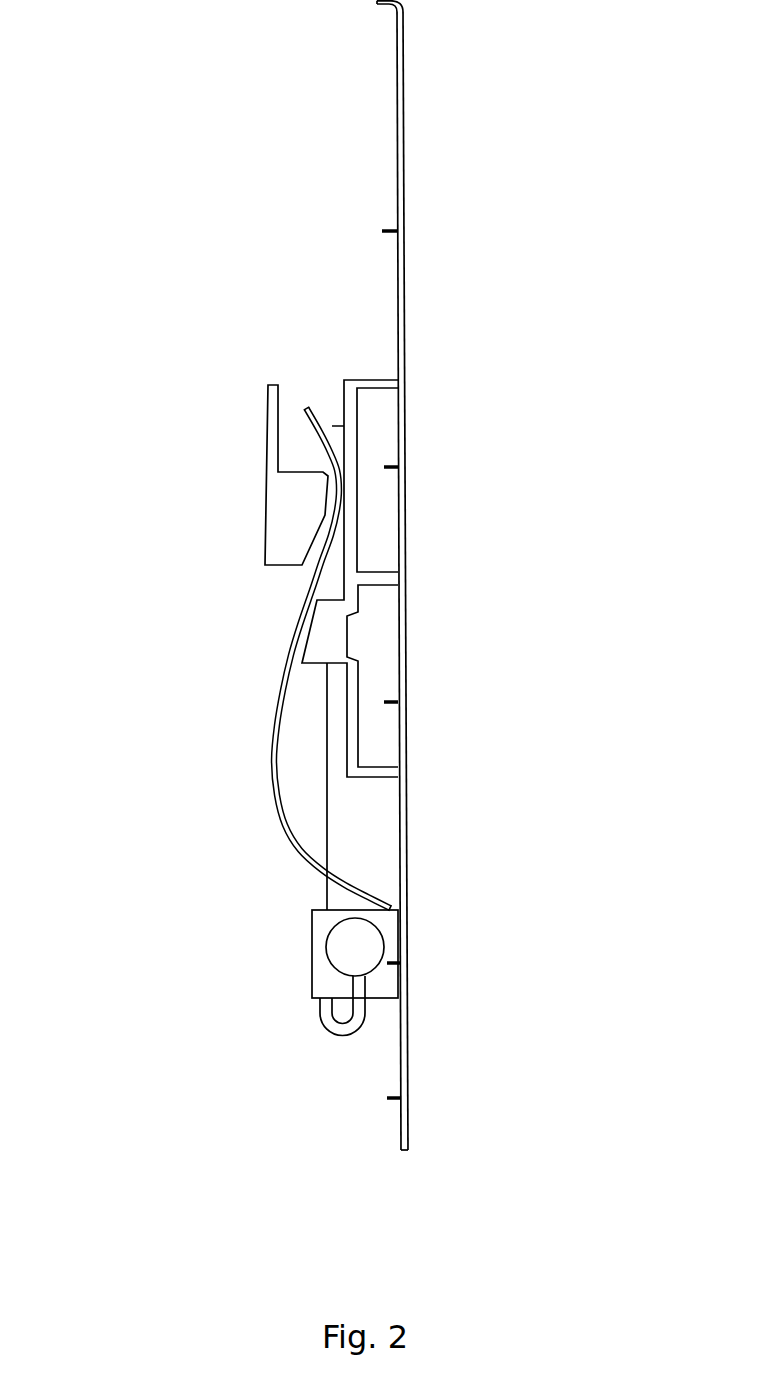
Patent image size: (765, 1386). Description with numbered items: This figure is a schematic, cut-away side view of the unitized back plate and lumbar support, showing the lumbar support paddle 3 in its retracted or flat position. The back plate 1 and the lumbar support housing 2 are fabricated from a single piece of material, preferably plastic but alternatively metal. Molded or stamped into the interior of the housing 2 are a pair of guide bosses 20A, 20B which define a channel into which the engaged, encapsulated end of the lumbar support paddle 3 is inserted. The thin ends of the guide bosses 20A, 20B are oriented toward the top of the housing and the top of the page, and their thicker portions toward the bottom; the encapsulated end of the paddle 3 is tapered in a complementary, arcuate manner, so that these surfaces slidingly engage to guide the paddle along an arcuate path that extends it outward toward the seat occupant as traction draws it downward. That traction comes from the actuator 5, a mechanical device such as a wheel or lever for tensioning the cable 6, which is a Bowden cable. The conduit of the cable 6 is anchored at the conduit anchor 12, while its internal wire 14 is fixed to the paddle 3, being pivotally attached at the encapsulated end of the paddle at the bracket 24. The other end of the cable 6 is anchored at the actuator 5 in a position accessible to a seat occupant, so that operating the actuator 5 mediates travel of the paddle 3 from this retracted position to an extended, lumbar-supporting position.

The back plate 1 is at (400, 163).
The lumbar support housing 2 is at (225, 635).
The lumbar support paddle 3 is at (280, 856).
The actuator 5 is at (368, 945).
The cable 6 is at (345, 1030).
The conduit anchor 12 is at (325, 982).
The internal wire 14 is at (318, 825).
The guide boss 20A is at (318, 643).
The guide boss 20B is at (275, 540).
The bracket 24 is at (340, 437).